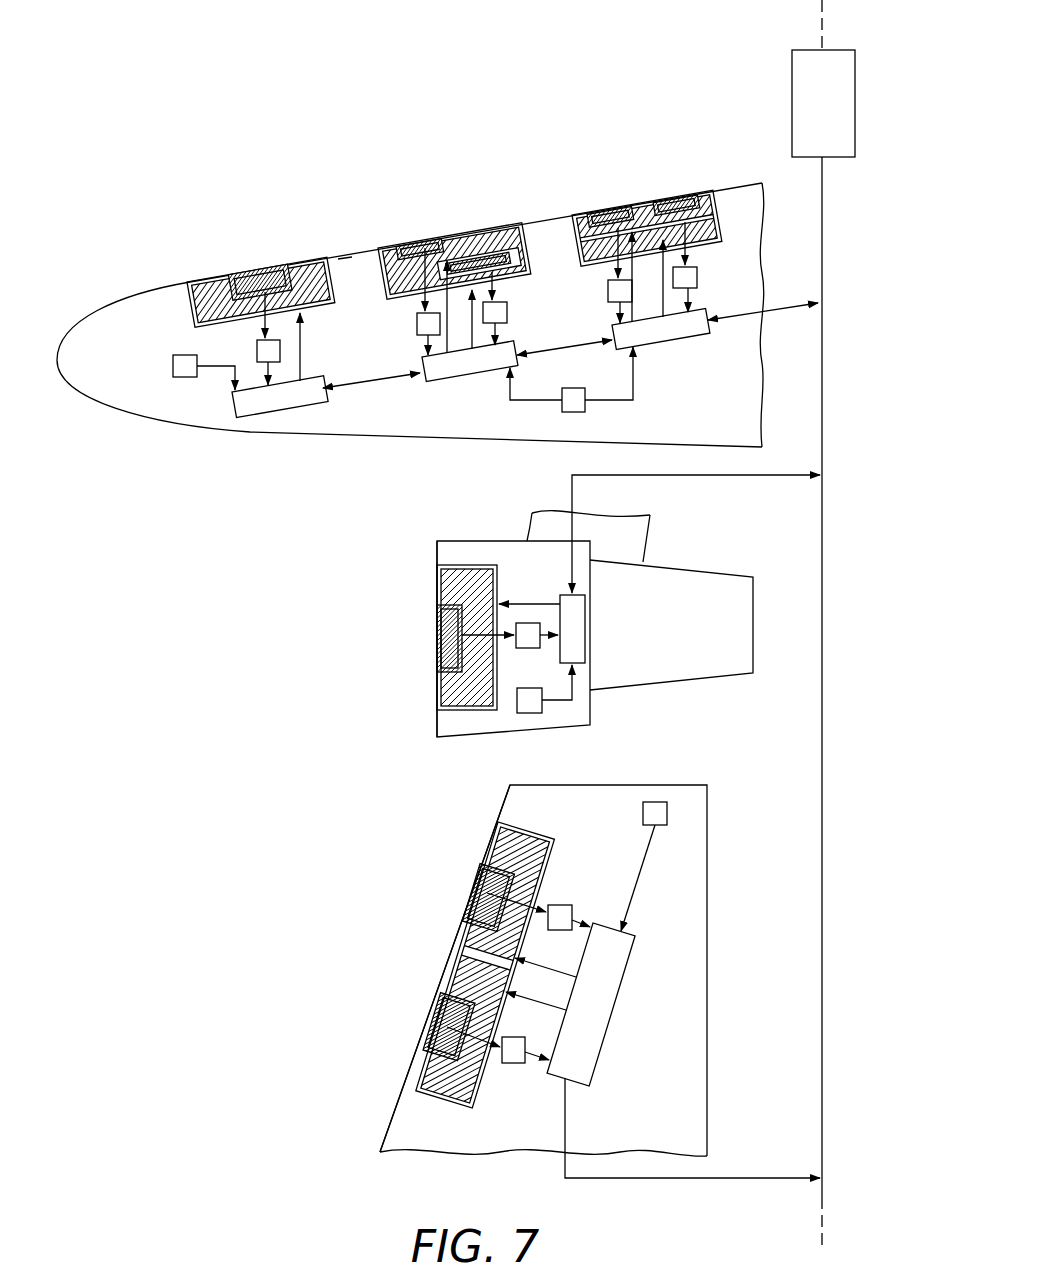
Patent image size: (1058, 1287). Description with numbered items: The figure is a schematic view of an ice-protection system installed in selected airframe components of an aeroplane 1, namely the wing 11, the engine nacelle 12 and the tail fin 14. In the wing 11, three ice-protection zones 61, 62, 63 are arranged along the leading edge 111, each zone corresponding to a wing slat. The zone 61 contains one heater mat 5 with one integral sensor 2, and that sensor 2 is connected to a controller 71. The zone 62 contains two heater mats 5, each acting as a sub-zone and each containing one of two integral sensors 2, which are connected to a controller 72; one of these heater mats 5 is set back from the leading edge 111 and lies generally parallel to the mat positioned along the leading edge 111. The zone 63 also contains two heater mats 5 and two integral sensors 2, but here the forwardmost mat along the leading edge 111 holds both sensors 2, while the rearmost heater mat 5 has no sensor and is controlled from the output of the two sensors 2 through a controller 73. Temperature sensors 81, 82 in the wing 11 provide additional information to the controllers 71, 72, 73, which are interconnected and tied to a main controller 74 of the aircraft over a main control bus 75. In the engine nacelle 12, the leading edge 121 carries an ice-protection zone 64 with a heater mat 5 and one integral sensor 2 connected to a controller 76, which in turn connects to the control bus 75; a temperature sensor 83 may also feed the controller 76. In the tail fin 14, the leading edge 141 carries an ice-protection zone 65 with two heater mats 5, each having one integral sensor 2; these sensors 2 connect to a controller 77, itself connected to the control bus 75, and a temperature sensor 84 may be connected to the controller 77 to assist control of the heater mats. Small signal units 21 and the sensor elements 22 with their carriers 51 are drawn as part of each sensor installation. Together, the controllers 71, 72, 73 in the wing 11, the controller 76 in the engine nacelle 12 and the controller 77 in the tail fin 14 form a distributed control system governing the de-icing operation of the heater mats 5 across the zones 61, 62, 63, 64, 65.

The aeroplane 1 is at (247, 164).
The integral sensor 2 is at (442, 586).
The heater mat 5 is at (300, 267).
The wing 11 is at (336, 437).
The engine nacelle 12 is at (470, 730).
The tail fin 14 is at (707, 961).
The signal processing unit 21 is at (257, 350).
The sensor element 22 is at (258, 272).
The sensor carrier 51 is at (228, 279).
The ice-protection zone 61 is at (330, 262).
The ice-protection zone 62 is at (522, 238).
The ice-protection zone 63 is at (712, 192).
The ice-protection zone 64 is at (464, 564).
The ice-protection zone 65 is at (426, 1098).
The controller 71 is at (232, 408).
The controller 72 is at (447, 381).
The controller 73 is at (672, 346).
The main controller 74 is at (792, 103).
The main control bus 75 is at (824, 377).
The controller 76 is at (585, 630).
The controller 77 is at (612, 1009).
The temperature sensor 81 is at (173, 366).
The temperature sensor 82 is at (585, 405).
The temperature sensor 83 is at (530, 713).
The temperature sensor 84 is at (643, 812).
The leading edge 111 is at (345, 258).
The leading edge 121 is at (437, 723).
The leading edge 141 is at (390, 1124).